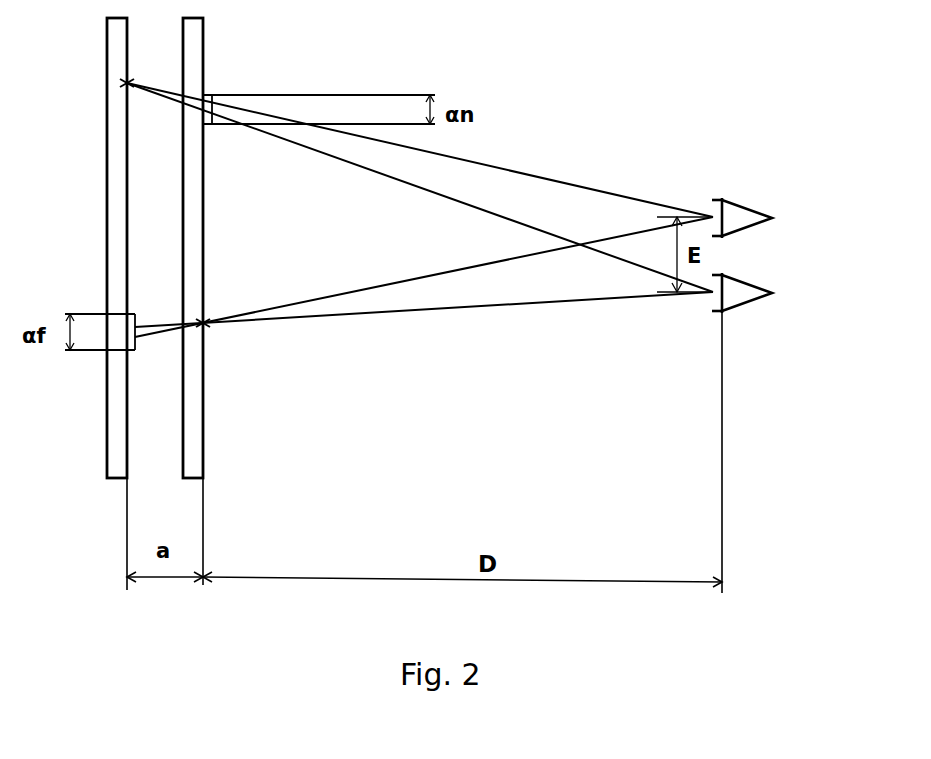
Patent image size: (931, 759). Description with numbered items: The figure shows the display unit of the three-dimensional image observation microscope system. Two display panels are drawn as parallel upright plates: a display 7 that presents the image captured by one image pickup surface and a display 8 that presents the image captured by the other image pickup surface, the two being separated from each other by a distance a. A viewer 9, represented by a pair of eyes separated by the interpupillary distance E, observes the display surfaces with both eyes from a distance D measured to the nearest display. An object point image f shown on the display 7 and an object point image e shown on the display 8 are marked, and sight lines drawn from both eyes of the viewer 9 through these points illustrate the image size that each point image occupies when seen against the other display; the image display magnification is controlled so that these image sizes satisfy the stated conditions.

The display 7 is at (198, 385).
The display 8 is at (105, 477).
The viewer 9 is at (773, 255).
The object point image e is at (118, 89).
The object point image f is at (208, 330).